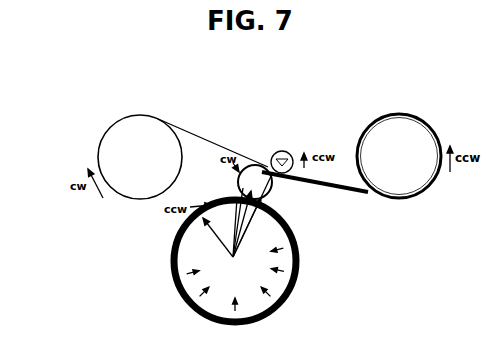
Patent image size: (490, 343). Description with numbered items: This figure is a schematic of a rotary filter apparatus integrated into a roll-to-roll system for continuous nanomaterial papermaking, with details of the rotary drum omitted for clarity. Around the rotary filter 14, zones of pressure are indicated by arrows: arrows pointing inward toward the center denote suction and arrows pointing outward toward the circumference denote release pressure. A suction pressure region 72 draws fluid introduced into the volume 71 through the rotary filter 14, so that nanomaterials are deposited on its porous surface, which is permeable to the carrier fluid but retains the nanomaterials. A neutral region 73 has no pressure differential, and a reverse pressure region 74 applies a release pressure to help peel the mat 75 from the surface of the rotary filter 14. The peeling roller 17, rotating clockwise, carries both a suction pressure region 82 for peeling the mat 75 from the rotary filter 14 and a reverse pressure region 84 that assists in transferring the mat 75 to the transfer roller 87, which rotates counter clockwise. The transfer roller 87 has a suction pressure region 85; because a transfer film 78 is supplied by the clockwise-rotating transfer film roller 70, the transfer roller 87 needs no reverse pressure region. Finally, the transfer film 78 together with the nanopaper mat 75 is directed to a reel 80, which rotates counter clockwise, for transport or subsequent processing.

The rotary filter 14 is at (282, 307).
The peeling roller 17 is at (240, 172).
The transfer film roller 70 is at (108, 156).
The volume 71 is at (175, 299).
The suction pressure region 72 is at (180, 270).
The neutral region 73 is at (210, 223).
The reverse pressure region 74 is at (273, 218).
The mat 75 is at (274, 207).
The transfer film 78 is at (198, 133).
The reel 80 is at (390, 136).
The suction pressure region 82 is at (238, 191).
The reverse pressure region 84 is at (272, 178).
The suction pressure region 85 is at (250, 121).
The transfer roller 87 is at (285, 156).